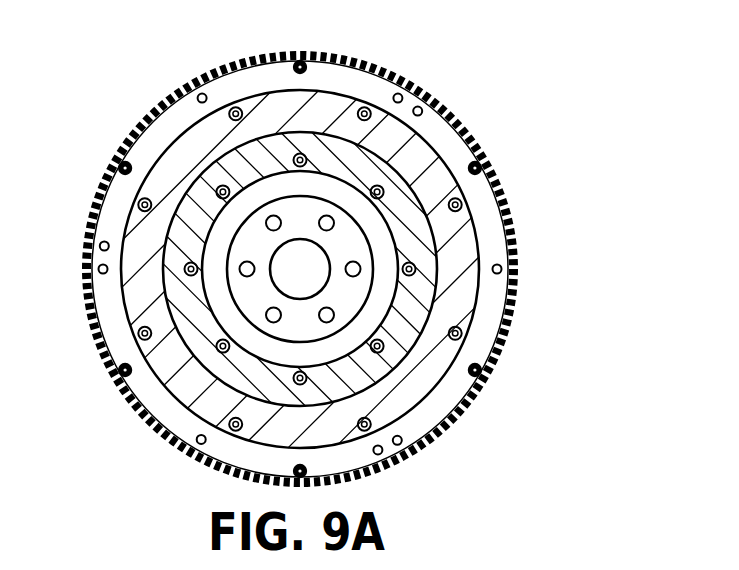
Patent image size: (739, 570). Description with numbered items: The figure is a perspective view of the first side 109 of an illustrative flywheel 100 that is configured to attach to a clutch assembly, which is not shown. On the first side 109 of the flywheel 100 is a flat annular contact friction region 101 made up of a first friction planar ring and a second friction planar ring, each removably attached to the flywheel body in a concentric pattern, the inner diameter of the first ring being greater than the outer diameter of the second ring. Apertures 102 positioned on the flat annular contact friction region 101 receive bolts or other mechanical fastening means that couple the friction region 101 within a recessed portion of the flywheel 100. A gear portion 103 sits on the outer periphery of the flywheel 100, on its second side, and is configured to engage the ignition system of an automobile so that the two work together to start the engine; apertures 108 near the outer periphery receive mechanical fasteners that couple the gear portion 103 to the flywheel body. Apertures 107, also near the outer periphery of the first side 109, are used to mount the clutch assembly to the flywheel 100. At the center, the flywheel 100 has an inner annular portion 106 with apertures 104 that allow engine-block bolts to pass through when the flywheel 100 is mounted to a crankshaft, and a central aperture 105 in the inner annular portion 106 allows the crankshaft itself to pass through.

The flywheel 100 is at (448, 75).
The flat annular contact friction region 101 is at (450, 155).
The apertures 102 is at (422, 264).
The gear portion 103 is at (83, 243).
The apertures 104 is at (340, 317).
The central aperture 105 is at (305, 271).
The inner annular portion 106 is at (255, 297).
The apertures 107 is at (121, 158).
The apertures 108 is at (203, 80).
The first side 109 is at (310, 88).